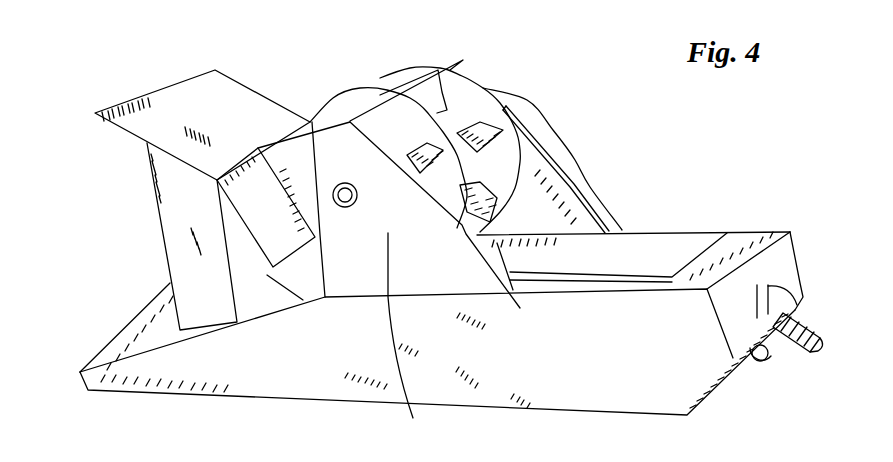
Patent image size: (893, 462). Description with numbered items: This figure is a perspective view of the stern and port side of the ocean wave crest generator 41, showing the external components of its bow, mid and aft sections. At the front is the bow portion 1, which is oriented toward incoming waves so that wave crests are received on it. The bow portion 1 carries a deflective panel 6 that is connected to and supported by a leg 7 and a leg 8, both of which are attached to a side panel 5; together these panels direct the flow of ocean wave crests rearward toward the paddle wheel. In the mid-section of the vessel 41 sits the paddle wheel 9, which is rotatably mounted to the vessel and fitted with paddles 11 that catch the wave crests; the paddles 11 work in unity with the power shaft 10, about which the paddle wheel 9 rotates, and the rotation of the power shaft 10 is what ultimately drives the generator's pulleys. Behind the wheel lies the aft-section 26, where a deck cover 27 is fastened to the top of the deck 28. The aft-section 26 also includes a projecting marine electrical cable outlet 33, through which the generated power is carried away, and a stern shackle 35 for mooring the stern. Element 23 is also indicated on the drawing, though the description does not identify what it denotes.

The bow portion 1 is at (70, 377).
The side panel 5 is at (538, 147).
The deflective panel 6 is at (183, 108).
The leg 7 is at (160, 222).
The leg 8 is at (258, 208).
The paddle wheel 9 is at (460, 100).
The power shaft 10 is at (343, 180).
The paddle 11 is at (455, 62).
The guide 23 is at (523, 117).
The aft-section 26 is at (806, 252).
The deck cover 27 is at (622, 256).
The deck 28 is at (727, 257).
The marine electrical cable outlet 33 is at (807, 318).
The stern shackle 35 is at (765, 364).
The ocean wave crest generator 41 is at (731, 118).